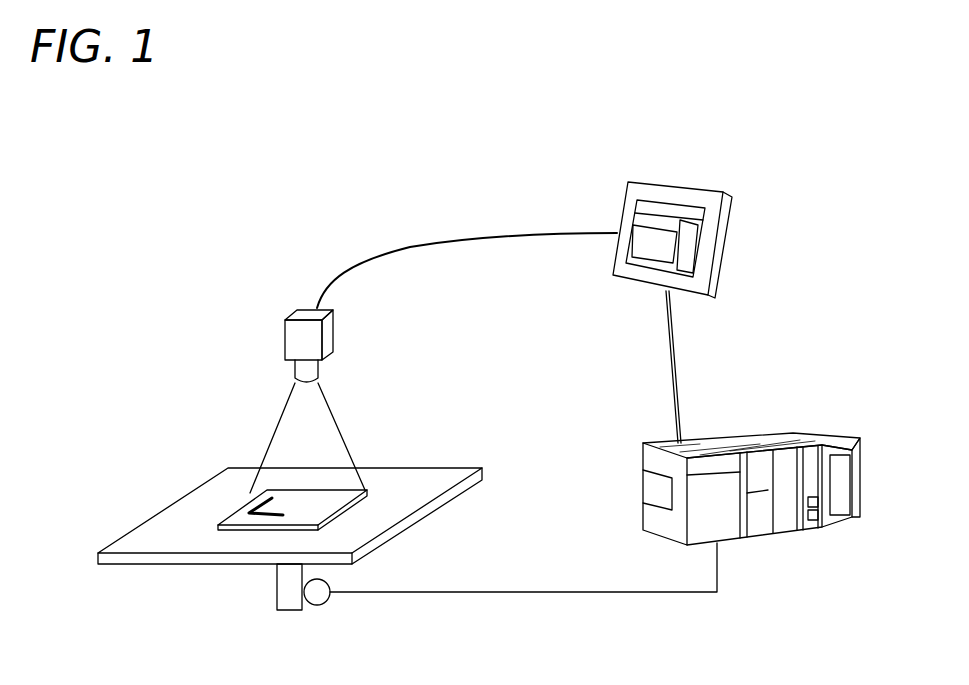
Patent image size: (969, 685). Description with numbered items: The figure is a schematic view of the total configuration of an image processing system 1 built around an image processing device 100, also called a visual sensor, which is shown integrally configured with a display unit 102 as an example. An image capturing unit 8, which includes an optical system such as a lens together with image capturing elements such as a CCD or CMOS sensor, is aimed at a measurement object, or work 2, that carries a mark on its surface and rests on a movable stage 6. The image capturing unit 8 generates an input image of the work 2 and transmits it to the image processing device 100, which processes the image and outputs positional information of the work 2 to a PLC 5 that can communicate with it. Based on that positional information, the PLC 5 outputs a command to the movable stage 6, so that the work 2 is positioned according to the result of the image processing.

The image processing system 1 is at (846, 147).
The image processing device 100 is at (700, 185).
The display unit 102 is at (688, 248).
The image capturing unit 8 is at (283, 338).
The measurement object (work) 2 is at (308, 503).
The movable stage 6 is at (412, 562).
The PLC (Programmable Logic Controller) 5 is at (812, 432).